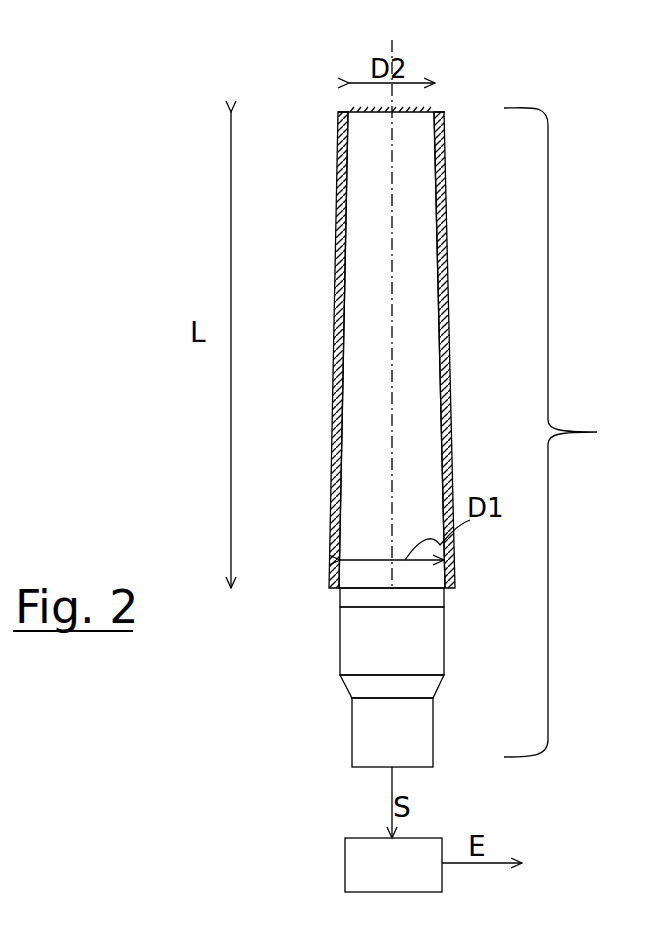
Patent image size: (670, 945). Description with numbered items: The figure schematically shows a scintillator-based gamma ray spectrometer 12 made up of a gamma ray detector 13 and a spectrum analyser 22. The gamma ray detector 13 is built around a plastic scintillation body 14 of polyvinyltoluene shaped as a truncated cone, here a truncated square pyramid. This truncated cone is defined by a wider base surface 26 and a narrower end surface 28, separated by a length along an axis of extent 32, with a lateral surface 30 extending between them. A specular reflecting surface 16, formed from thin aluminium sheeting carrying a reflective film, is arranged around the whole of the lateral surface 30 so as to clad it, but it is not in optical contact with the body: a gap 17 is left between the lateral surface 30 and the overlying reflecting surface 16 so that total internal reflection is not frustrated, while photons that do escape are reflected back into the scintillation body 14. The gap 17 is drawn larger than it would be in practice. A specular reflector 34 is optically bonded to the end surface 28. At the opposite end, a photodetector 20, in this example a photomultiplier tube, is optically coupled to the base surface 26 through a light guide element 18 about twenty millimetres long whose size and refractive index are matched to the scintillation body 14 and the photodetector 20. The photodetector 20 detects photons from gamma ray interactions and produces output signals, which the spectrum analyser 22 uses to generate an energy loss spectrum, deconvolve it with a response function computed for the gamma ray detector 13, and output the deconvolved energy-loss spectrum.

The gamma ray spectrometer 12 is at (115, 172).
The gamma ray detector 13 is at (572, 432).
The plastic scintillation body 14 is at (392, 498).
The specular reflecting surface 16 is at (333, 475).
The gap 17 is at (343, 375).
The light guide element 18 is at (337, 592).
The photodetector 20 is at (340, 660).
The spectrum analyser 22 is at (345, 870).
The base surface 26 is at (430, 592).
The end surface 28 is at (340, 122).
The lateral surface 30 is at (338, 232).
The axis of extent 32 is at (396, 280).
The specular reflector 34 is at (400, 112).